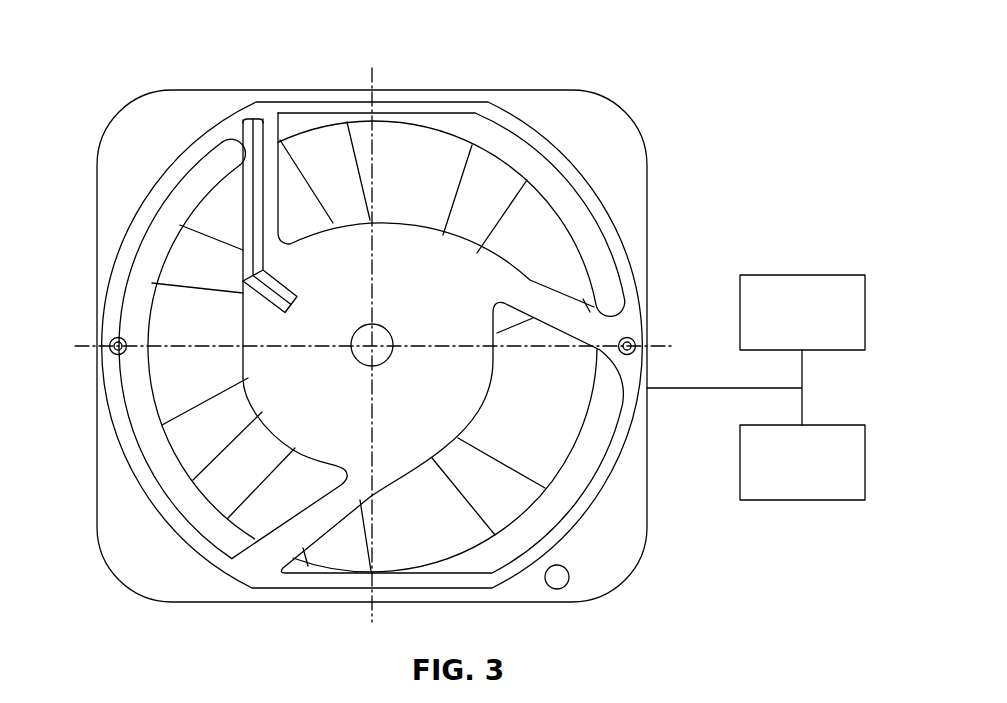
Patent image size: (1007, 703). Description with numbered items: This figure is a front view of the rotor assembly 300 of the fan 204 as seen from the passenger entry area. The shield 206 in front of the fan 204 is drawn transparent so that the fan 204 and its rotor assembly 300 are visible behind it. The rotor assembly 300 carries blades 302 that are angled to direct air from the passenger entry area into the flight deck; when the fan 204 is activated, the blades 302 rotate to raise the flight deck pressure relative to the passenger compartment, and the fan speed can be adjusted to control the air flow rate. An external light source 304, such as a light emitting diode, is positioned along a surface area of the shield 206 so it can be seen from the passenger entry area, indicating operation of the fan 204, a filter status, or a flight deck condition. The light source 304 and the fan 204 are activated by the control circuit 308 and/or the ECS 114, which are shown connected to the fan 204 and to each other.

The fan 204 is at (407, 86).
The shield 206 is at (124, 578).
The rotor assembly 300 is at (172, 156).
The blades 302 is at (178, 288).
The external light source 304 is at (586, 578).
The control circuit 308 is at (867, 312).
The ECS 114 is at (867, 462).